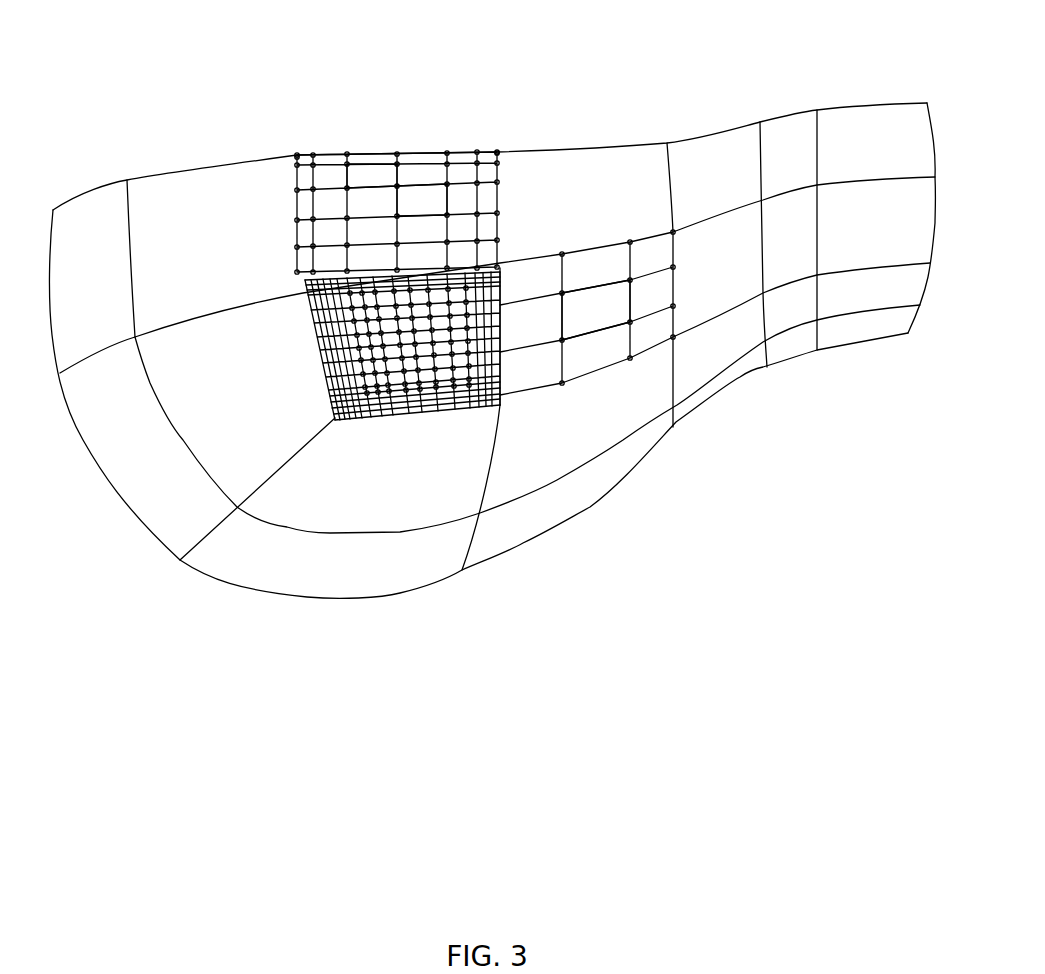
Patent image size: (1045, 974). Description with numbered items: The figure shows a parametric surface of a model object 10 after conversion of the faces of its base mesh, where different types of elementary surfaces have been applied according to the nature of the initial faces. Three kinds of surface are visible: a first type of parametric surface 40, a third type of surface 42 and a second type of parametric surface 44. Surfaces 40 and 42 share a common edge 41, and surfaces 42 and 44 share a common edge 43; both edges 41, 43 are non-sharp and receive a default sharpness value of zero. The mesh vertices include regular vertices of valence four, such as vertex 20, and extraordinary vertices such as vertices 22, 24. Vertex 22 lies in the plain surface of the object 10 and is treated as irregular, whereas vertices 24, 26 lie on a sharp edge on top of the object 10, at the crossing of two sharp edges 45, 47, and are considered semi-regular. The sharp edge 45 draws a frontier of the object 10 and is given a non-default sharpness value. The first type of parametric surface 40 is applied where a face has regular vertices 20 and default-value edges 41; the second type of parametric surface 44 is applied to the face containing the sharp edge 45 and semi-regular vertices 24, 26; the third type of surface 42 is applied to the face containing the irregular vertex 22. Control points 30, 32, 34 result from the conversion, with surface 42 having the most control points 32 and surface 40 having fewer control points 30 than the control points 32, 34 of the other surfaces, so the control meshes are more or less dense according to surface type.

The model object 10 is at (745, 410).
The regular vertex 20 is at (683, 215).
The irregular vertex 22 is at (335, 420).
The semi-regular vertex 24 is at (296, 156).
The semi-regular vertex 26 is at (507, 150).
The control points of first type of parametric surface 30 is at (573, 333).
The control points of third type of surface 32 is at (448, 403).
The control points of second type of parametric surface 34 is at (399, 218).
The first type of parametric surface 40 is at (617, 322).
The common edge 41 is at (512, 335).
The third type of surface 42 is at (378, 333).
The common edge 43 is at (374, 266).
The second type of parametric surface 44 is at (366, 181).
The sharp edge 45 is at (373, 142).
The sharp edge 47 is at (160, 160).